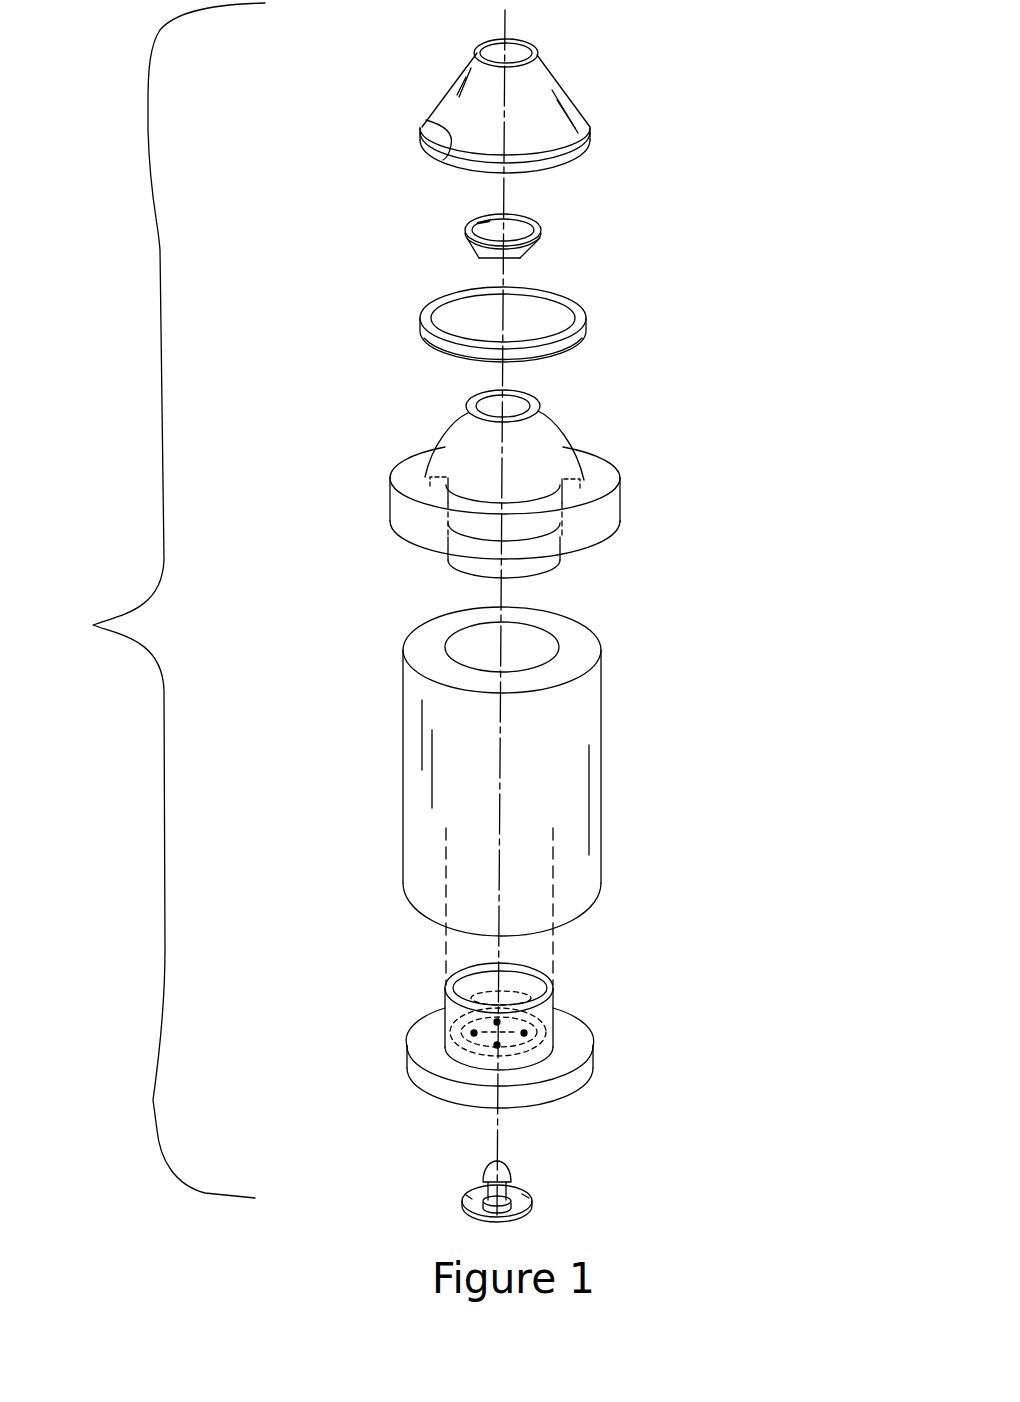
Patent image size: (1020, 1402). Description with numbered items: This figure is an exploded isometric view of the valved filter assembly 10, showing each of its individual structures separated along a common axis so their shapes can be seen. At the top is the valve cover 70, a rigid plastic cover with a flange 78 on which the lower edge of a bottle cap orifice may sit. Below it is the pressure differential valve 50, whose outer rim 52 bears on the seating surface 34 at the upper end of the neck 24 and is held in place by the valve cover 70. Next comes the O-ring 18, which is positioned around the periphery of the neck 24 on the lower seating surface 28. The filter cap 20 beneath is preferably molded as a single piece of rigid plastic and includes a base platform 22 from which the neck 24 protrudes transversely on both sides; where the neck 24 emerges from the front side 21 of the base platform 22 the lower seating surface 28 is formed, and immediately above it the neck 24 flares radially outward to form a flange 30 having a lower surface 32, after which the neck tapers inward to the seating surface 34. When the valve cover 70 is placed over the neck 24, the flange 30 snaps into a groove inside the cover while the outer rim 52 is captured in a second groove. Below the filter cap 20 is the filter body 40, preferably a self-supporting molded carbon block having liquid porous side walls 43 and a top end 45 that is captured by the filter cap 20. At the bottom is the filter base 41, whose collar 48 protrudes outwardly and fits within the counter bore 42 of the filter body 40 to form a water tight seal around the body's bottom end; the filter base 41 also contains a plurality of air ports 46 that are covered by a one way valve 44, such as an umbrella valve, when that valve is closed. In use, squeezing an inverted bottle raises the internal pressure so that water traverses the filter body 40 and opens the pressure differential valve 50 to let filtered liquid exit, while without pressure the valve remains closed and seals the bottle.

The valved filter assembly 10 is at (157, 600).
The valve cover 70 is at (570, 85).
The flange 78 is at (426, 120).
The pressure differential valve 50 is at (545, 232).
The outer rim 52 is at (470, 247).
The O-ring 18 is at (592, 315).
The filter cap 20 is at (506, 477).
The seating surface 34 is at (532, 402).
The neck 24 is at (450, 504).
The lower seating surface 28 is at (445, 507).
The lower surface 32 is at (608, 467).
The base platform 22 is at (622, 502).
The flange 30 is at (549, 559).
The front side 21 is at (463, 521).
The filter body 40 is at (501, 776).
The top end 45 is at (462, 652).
The counter bore 42 is at (530, 652).
The side walls 43 is at (403, 736).
The filter base 41 is at (497, 1016).
The collar 48 is at (545, 970).
The air ports 46 is at (497, 1022).
The one way valve 44 is at (658, 1015).